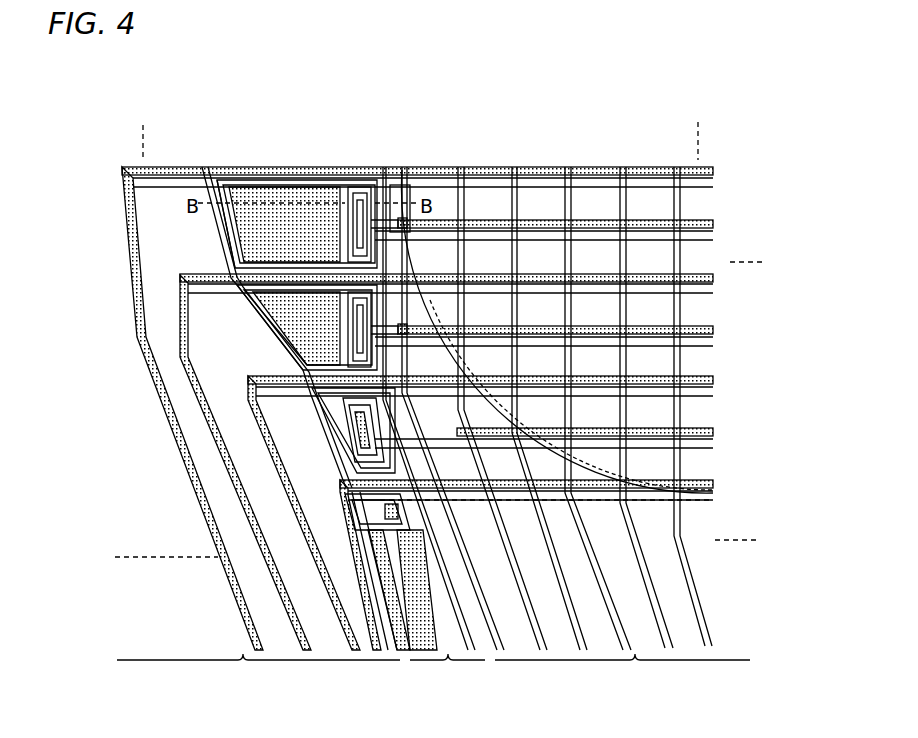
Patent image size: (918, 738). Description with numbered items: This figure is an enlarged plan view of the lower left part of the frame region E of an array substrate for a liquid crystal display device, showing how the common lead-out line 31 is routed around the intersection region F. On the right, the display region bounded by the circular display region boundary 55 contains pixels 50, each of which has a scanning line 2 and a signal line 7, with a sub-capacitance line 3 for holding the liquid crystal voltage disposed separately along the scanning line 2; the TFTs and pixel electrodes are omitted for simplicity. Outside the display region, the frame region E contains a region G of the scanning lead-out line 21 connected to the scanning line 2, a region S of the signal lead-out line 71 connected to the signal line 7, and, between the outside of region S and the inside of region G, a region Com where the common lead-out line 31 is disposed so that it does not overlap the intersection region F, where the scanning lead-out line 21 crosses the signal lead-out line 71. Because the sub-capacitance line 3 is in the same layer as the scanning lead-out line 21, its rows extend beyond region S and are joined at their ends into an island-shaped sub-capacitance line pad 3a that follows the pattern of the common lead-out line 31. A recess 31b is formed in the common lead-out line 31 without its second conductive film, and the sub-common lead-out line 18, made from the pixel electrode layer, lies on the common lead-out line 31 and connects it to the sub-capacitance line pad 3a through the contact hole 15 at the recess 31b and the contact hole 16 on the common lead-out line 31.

The sub-common lead-out line 18 is at (203, 168).
The common lead-out line 31 is at (214, 168).
The sub-capacitance line pad 3a is at (265, 188).
The contact hole 16 is at (290, 230).
The recess 31b is at (352, 190).
The contact hole 15 is at (362, 200).
The sub-capacitance line 3 is at (472, 175).
The scanning line 2 is at (520, 193).
The signal line 7 is at (525, 200).
The pixel 50 is at (588, 207).
The display region boundary 55 is at (600, 482).
The scanning lead-out line 21 is at (230, 590).
The signal lead-out line 71 is at (573, 623).
The intersection region F is at (477, 440).
The frame region E is at (230, 355).
The region of scanning lead-out line G is at (258, 676).
The region of common lead-out line Com is at (447, 675).
The region of signal lead-out line S is at (622, 676).